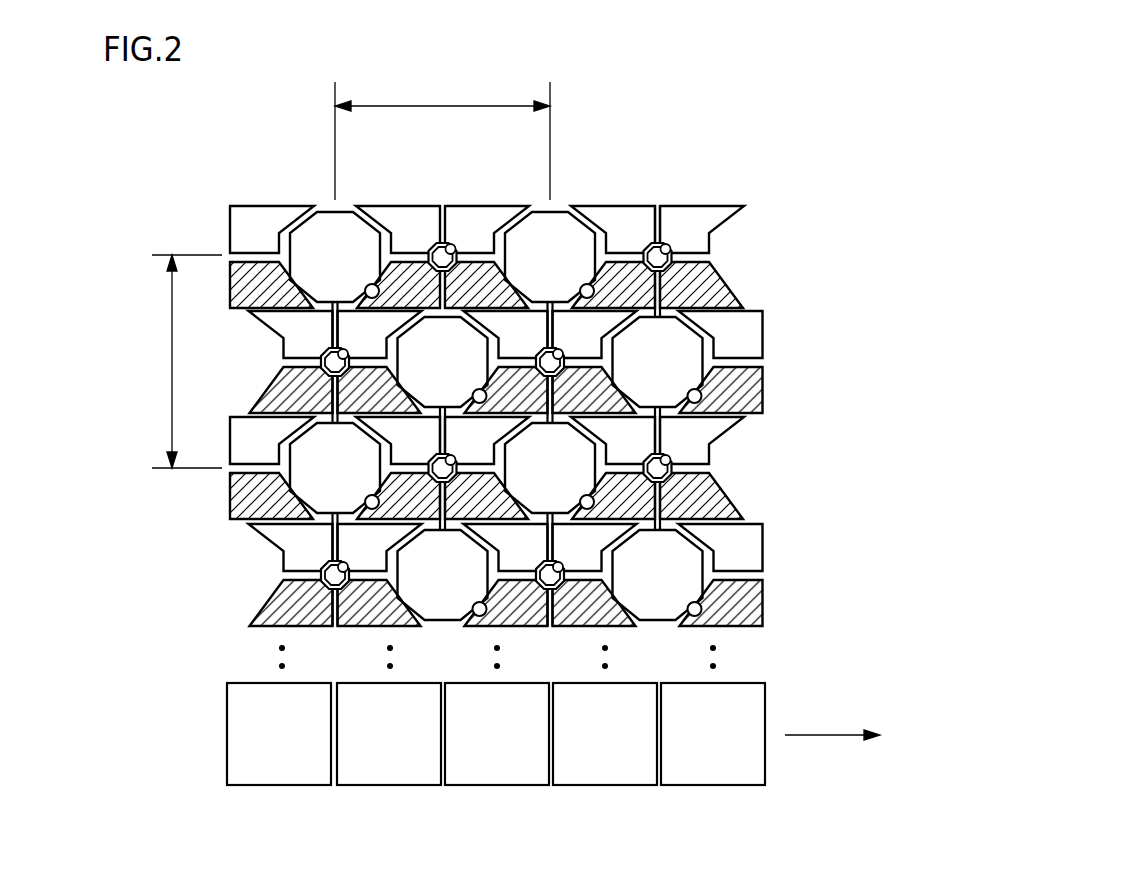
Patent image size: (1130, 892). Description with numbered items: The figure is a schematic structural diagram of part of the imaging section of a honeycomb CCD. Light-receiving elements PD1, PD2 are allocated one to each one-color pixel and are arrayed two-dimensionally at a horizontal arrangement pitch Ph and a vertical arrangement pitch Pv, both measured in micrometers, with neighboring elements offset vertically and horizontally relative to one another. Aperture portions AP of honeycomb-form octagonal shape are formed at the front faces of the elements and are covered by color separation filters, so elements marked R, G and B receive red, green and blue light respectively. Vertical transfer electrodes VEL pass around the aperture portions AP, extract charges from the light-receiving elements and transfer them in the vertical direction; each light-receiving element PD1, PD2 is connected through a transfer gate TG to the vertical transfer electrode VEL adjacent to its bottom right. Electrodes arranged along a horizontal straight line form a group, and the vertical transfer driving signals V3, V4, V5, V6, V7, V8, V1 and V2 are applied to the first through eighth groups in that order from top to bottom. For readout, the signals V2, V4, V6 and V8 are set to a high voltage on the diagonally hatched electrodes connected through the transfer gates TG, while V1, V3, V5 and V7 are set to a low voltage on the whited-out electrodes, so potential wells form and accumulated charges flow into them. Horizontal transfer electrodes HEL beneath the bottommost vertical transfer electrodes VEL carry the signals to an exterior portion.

The vertical transfer electrodes VEL is at (643, 390).
The vertical transfer driving signal V1 is at (762, 550).
The vertical transfer driving signal V2 is at (762, 602).
The vertical transfer driving signal V3 is at (709, 232).
The vertical transfer driving signal V4 is at (709, 283).
The vertical transfer driving signal V5 is at (762, 337).
The vertical transfer driving signal V6 is at (762, 388).
The vertical transfer driving signal V7 is at (709, 443).
The vertical transfer driving signal V8 is at (709, 495).
The light-receiving element PD1 is at (320, 212).
The light-receiving element PD2 is at (662, 257).
The aperture portion AP is at (372, 290).
The transfer gate TG is at (392, 232).
The horizontal transfer electrodes HEL is at (553, 750).
The horizontal arrangement pitch Ph is at (442, 139).
The vertical arrangement pitch Pv is at (145, 361).